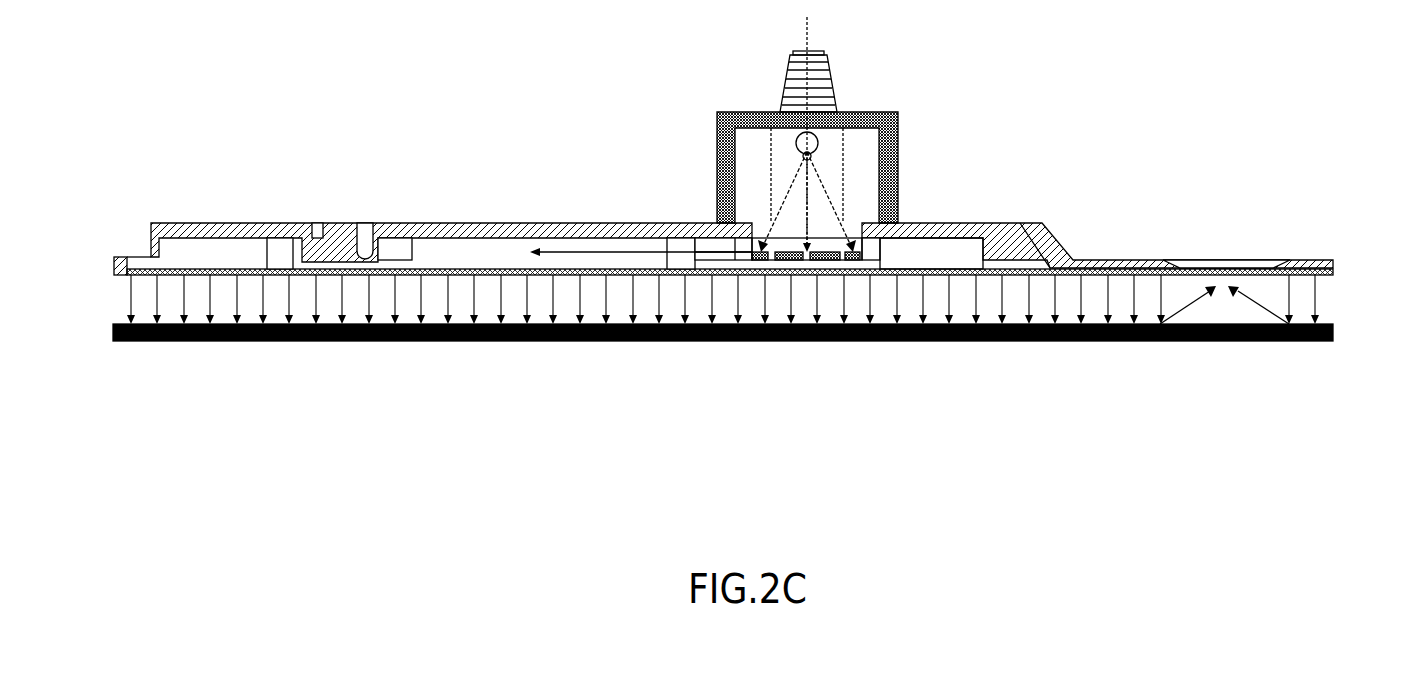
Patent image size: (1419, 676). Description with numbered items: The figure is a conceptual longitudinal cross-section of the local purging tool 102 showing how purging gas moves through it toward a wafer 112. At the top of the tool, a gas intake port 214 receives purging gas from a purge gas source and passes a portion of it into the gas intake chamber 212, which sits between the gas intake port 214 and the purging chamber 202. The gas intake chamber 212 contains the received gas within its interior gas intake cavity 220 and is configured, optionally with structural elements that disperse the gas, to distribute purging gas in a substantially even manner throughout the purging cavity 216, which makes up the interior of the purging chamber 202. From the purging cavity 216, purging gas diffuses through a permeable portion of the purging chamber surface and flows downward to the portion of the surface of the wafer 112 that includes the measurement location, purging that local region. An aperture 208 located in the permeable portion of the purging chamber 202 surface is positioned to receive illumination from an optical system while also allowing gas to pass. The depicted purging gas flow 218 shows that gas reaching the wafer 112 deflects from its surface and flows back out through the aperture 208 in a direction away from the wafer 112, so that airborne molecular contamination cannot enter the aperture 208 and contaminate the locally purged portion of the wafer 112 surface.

The local purging tool 102 is at (320, 126).
The wafer 112 is at (113, 328).
The purging chamber 202 is at (225, 223).
The aperture 208 is at (1225, 256).
The gas intake chamber 212 is at (717, 128).
The gas intake port 214 is at (786, 72).
The purging cavity 216 is at (925, 252).
The purging gas flow 218 is at (1305, 300).
The gas intake cavity 220 is at (862, 137).